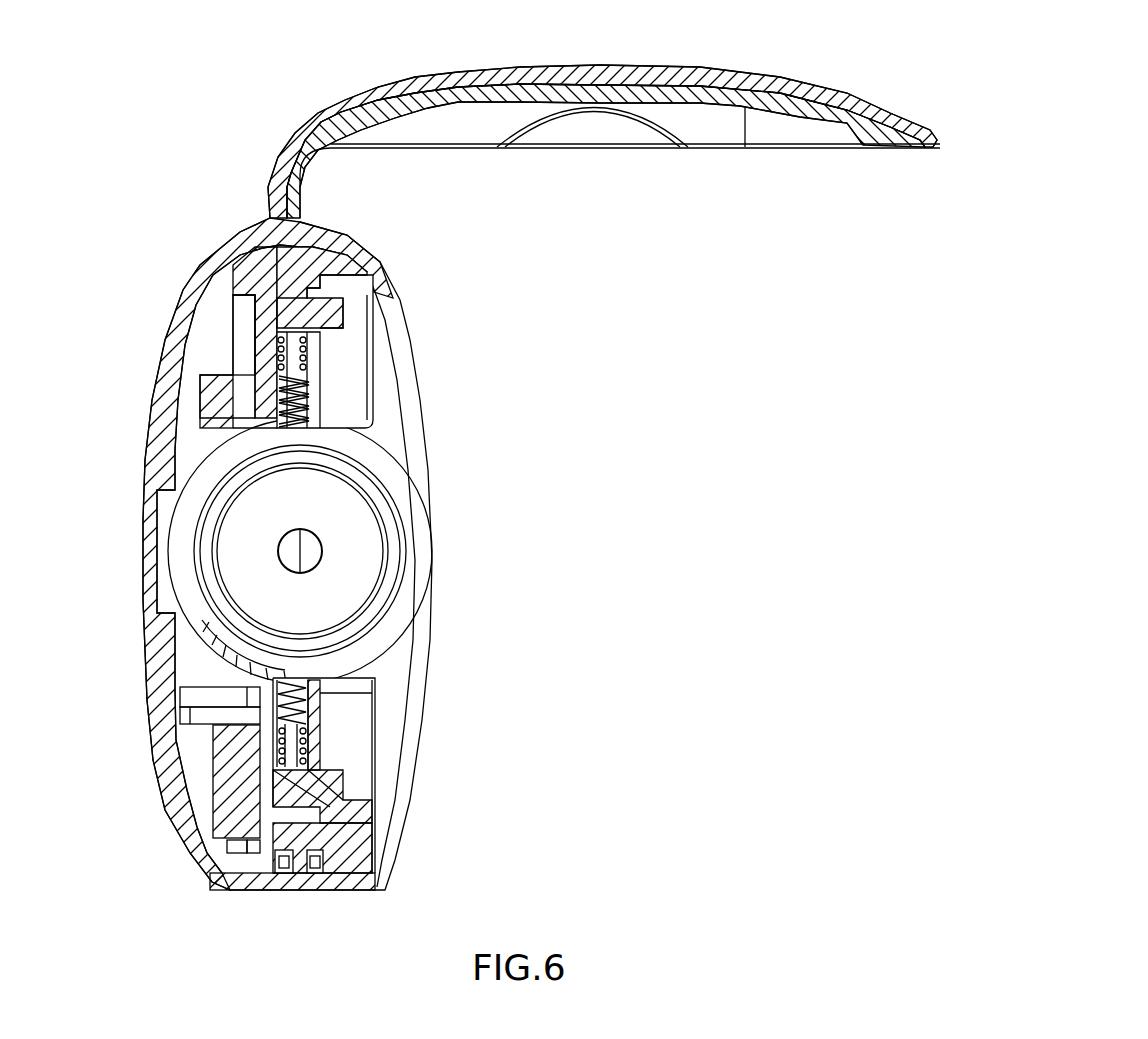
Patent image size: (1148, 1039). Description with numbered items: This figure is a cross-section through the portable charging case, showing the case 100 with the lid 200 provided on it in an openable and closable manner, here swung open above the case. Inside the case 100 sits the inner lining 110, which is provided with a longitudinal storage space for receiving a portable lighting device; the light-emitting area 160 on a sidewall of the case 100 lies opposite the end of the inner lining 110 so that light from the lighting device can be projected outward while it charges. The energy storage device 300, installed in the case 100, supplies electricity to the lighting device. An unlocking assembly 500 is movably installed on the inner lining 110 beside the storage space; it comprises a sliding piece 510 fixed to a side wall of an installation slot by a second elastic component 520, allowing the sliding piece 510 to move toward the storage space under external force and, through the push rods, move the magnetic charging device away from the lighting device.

The case 100 is at (230, 252).
The inner lining 110 is at (275, 277).
The light-emitting area 160 is at (314, 338).
The lid 200 is at (801, 94).
The energy storage device 300 is at (227, 792).
The unlocking assembly 500 is at (475, 406).
The sliding piece 510 is at (292, 356).
The second elastic component 520 is at (300, 397).